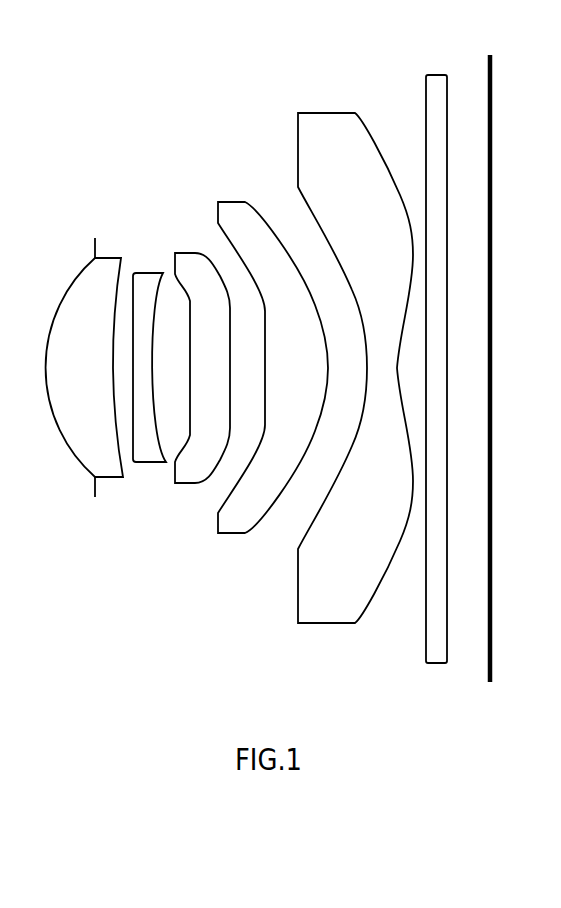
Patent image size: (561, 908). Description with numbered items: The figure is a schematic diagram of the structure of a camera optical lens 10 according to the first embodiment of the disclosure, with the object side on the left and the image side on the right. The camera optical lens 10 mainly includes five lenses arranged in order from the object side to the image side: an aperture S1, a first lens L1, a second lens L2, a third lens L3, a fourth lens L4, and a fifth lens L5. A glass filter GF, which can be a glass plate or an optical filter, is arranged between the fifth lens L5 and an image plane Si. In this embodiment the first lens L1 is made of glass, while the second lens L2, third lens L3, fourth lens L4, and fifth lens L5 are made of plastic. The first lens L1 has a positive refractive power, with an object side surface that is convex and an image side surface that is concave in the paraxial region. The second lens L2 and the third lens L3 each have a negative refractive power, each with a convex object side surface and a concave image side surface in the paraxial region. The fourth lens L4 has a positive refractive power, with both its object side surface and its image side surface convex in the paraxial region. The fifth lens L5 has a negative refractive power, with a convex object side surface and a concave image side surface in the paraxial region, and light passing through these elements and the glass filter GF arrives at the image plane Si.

The camera optical lens 10 is at (282, 33).
The aperture S1 is at (88, 234).
The first lens L1 is at (84, 356).
The second lens L2 is at (149, 356).
The third lens L3 is at (201, 357).
The fourth lens L4 is at (273, 355).
The fifth lens L5 is at (355, 354).
The glass filter GF is at (433, 357).
The image plane Si is at (488, 357).